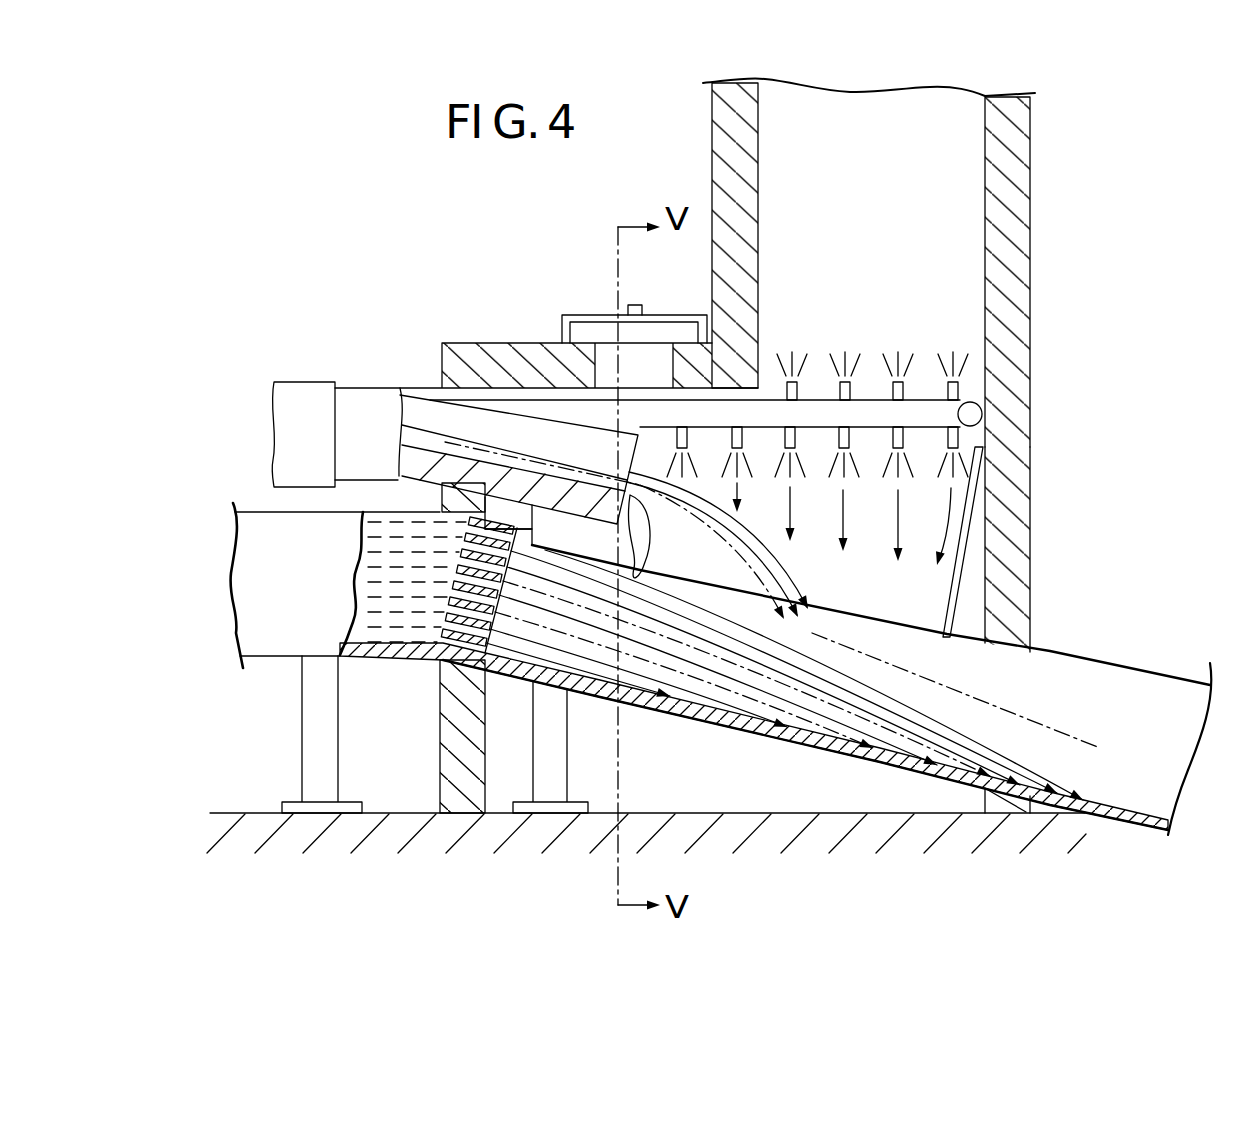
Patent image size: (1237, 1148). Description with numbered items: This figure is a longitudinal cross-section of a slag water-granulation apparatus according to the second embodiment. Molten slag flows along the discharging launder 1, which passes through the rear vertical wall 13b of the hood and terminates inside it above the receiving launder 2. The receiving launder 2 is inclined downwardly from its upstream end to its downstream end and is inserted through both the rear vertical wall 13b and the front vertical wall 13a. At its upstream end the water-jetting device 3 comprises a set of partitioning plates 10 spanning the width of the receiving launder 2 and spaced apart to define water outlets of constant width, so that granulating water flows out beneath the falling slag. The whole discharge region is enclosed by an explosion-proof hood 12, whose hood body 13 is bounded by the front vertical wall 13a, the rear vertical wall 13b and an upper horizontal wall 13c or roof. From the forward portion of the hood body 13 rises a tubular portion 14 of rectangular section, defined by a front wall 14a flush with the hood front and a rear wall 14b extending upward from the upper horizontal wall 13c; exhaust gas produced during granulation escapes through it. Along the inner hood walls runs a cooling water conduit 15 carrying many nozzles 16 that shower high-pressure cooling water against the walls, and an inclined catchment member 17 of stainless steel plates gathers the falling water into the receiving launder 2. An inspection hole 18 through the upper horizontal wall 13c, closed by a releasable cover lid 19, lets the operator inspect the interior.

The discharging launder 1 is at (300, 382).
The receiving launder 2 is at (1141, 657).
The water-jetting device 3 is at (290, 583).
The partitioning plates 10 is at (440, 650).
The explosion-proof hood 12 is at (895, 262).
The hood body 13 is at (754, 551).
The front vertical wall 13a is at (1020, 573).
The rear vertical wall 13b is at (450, 727).
The upper horizontal wall 13c is at (478, 352).
The tubular portion 14 is at (869, 262).
The front wall 14a is at (1020, 207).
The rear wall 14b is at (735, 150).
The cooling water conduit 15 is at (920, 410).
The nozzles 16 is at (798, 392).
The catchment member 17 is at (918, 606).
The inspection hole 18 is at (607, 345).
The cover lid 19 is at (668, 312).